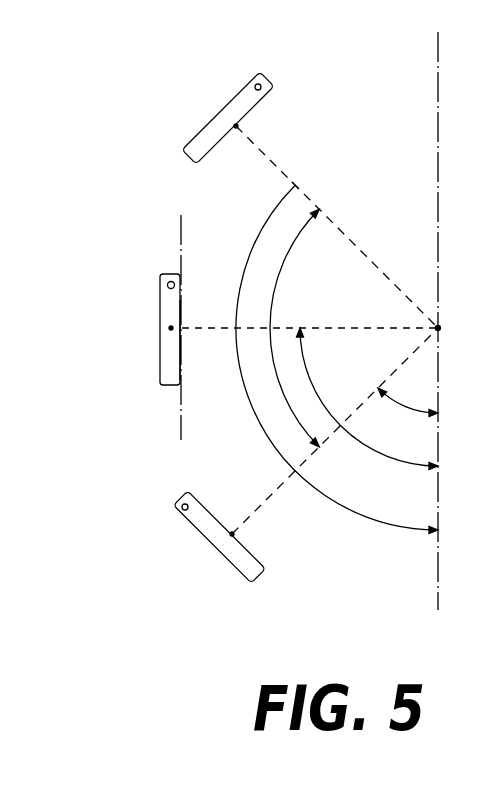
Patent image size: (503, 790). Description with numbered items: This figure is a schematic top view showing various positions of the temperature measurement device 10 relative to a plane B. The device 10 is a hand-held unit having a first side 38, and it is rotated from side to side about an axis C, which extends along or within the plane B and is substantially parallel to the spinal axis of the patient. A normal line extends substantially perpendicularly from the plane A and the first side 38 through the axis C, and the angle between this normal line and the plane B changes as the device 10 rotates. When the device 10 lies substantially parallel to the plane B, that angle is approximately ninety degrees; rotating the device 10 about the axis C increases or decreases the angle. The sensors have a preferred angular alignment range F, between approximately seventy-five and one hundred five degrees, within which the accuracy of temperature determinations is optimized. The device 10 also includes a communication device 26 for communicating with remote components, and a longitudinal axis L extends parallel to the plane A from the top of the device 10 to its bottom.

The temperature measurement device 10 is at (172, 386).
The communication device 26 is at (167, 286).
The first side 38 is at (181, 368).
The plane A is at (180, 236).
The plane B is at (440, 122).
The axis C is at (441, 327).
The longitudinal axis L is at (169, 329).
The preferred angular alignment range F is at (290, 249).